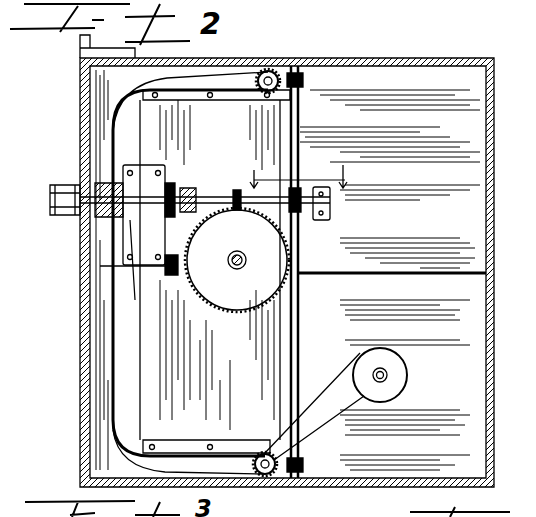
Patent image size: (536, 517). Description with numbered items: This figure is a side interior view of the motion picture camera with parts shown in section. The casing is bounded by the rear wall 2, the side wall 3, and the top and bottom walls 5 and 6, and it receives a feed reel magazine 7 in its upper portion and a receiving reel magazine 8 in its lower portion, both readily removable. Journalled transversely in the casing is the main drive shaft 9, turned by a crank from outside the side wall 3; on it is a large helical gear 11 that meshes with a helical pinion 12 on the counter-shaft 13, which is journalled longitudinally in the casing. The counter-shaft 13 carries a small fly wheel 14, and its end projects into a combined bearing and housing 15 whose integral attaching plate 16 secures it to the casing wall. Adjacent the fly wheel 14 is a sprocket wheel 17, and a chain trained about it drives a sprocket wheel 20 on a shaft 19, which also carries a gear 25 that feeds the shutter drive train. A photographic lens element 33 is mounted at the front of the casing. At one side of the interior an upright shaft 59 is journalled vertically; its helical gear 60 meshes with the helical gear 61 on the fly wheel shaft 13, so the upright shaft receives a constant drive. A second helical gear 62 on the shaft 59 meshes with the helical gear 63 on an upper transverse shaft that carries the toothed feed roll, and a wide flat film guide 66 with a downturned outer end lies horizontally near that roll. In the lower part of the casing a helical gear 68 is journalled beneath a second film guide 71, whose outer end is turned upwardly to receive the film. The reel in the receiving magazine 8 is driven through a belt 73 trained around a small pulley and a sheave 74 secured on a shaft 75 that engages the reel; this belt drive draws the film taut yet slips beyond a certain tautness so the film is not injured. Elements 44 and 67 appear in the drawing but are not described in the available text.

The rear wall 2 is at (492, 392).
The side wall 3 is at (240, 346).
The top wall 5 is at (436, 60).
The bottom wall 6 is at (342, 488).
The feed reel magazine 7 is at (391, 181).
The receiving reel magazine 8 is at (405, 385).
The main drive shaft 9 is at (240, 265).
The large helical gear 11 is at (237, 260).
The helical pinion 12 is at (236, 188).
The counter-shaft 13 is at (212, 190).
The fly wheel 14 is at (205, 232).
The combined bearing and housing 15 is at (88, 265).
The attaching plate 16 is at (137, 215).
The sprocket wheel 17 is at (172, 182).
The shaft 19 is at (357, 176).
The sprocket wheel 20 is at (172, 280).
The gear 25 is at (157, 320).
The photographic lens element 33 is at (65, 215).
The endless belt 44 is at (115, 125).
The upright shaft 59 is at (297, 345).
The helical gear 60 is at (320, 220).
The helical gear 61 is at (298, 185).
The helical gear 62 is at (303, 80).
The helical gear 63 is at (275, 68).
The film guide 66 is at (196, 100).
The lower bearing 67 is at (309, 468).
The helical gear 68 is at (265, 452).
The film guide 71 is at (217, 440).
The belt 73 is at (322, 395).
The sheave 74 is at (387, 367).
The shaft 75 is at (387, 375).